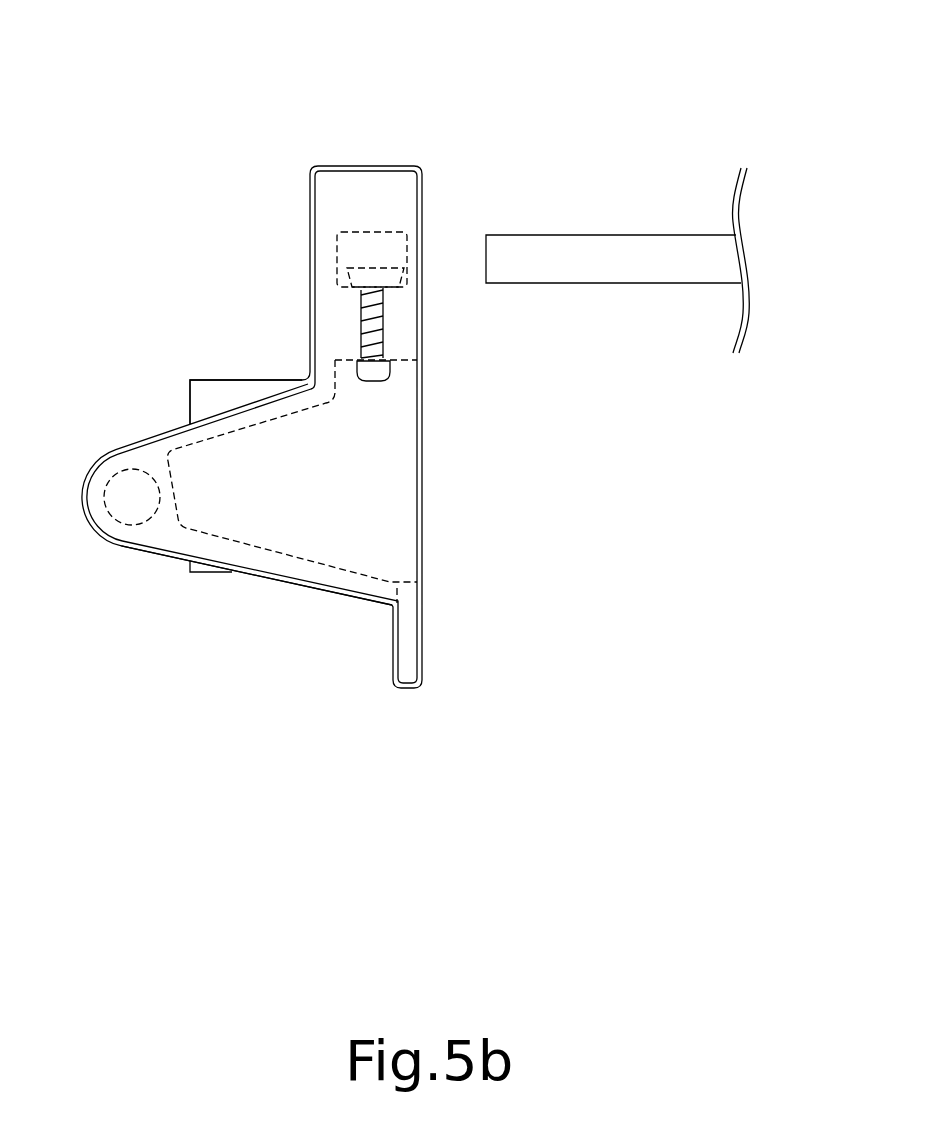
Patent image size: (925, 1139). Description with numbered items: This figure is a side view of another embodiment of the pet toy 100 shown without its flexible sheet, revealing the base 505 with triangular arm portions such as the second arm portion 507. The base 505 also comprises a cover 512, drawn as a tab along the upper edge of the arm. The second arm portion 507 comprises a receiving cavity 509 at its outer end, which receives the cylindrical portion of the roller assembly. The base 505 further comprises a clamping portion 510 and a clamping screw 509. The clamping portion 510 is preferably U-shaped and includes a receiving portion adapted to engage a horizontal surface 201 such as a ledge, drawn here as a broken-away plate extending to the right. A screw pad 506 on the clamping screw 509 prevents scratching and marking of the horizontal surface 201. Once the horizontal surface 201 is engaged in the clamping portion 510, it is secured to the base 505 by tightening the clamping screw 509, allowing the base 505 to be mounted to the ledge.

The mounting assembly 100 is at (187, 63).
The horizontal surface 201 is at (624, 271).
The base 505 is at (323, 491).
The screw pad 506 is at (345, 270).
The second arm portion 507 is at (255, 575).
The clamping screw 509 is at (118, 472).
The clamping portion 510 is at (407, 230).
The cover 512 is at (190, 380).